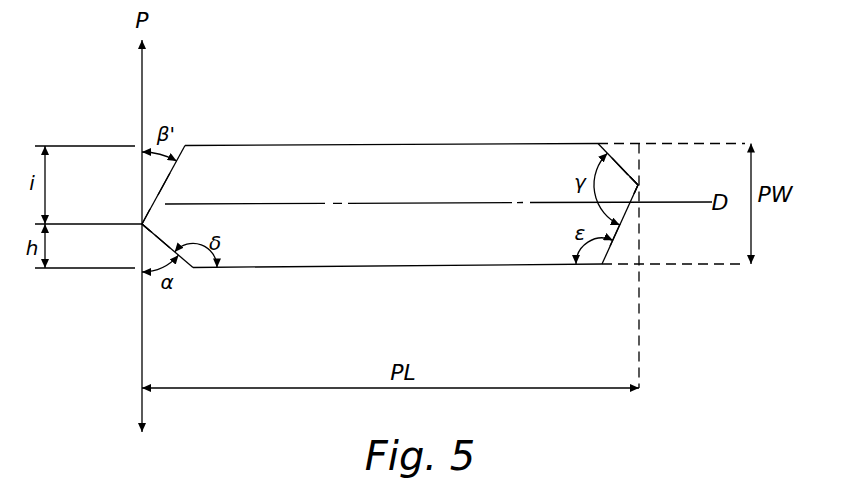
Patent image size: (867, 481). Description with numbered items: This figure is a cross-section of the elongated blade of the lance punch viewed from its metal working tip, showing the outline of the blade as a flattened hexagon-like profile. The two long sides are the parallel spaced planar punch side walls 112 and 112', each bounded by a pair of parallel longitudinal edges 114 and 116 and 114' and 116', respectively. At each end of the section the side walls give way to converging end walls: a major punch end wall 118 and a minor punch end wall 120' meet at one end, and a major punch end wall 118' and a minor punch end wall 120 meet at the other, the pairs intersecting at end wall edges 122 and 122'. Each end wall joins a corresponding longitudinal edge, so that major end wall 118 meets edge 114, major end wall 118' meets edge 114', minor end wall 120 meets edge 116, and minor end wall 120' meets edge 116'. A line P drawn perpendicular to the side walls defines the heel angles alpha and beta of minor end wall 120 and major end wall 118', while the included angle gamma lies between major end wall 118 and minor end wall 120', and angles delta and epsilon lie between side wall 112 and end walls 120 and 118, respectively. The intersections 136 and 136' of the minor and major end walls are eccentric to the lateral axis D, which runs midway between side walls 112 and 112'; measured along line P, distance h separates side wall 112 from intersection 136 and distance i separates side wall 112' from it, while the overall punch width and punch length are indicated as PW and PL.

The punch side wall 112 is at (397, 284).
The punch side wall 112' is at (391, 116).
The longitudinal edge 114 is at (589, 248).
The longitudinal edge 114' is at (584, 136).
The longitudinal edge 116 is at (188, 264).
The longitudinal edge 116' is at (200, 164).
The major punch end wall 118 is at (650, 241).
The major punch end wall 118' is at (200, 177).
The minor punch end wall 120 is at (188, 229).
The minor punch end wall 120' is at (649, 137).
The end wall edge 122 is at (667, 203).
The end wall edge 122' is at (107, 200).
The intersection 136 is at (110, 241).
The intersection 136' is at (674, 171).